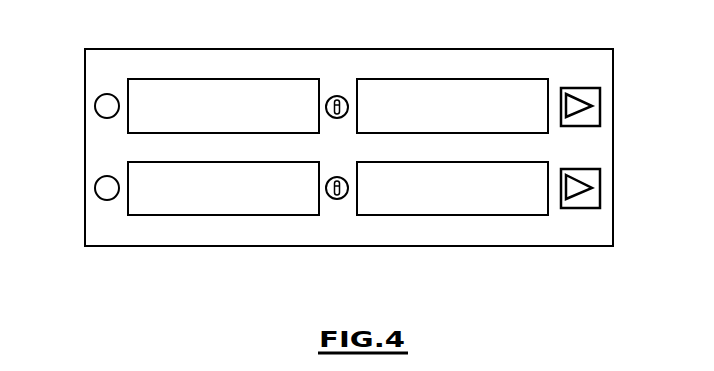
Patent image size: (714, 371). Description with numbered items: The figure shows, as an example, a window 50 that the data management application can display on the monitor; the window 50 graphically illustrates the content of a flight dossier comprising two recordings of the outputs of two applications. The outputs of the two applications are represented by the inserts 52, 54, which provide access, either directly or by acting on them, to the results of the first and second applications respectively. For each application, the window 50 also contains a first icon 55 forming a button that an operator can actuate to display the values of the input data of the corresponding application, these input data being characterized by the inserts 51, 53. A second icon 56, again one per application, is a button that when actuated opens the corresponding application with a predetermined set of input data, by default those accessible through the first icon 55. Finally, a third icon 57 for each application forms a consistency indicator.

The window 50 is at (575, 49).
The insert 51 is at (447, 79).
The insert 52 is at (213, 79).
The insert 53 is at (449, 216).
The insert 54 is at (213, 216).
The first icon 55 is at (338, 96).
The second icon 56 is at (601, 106).
The third icon 57 is at (95, 106).